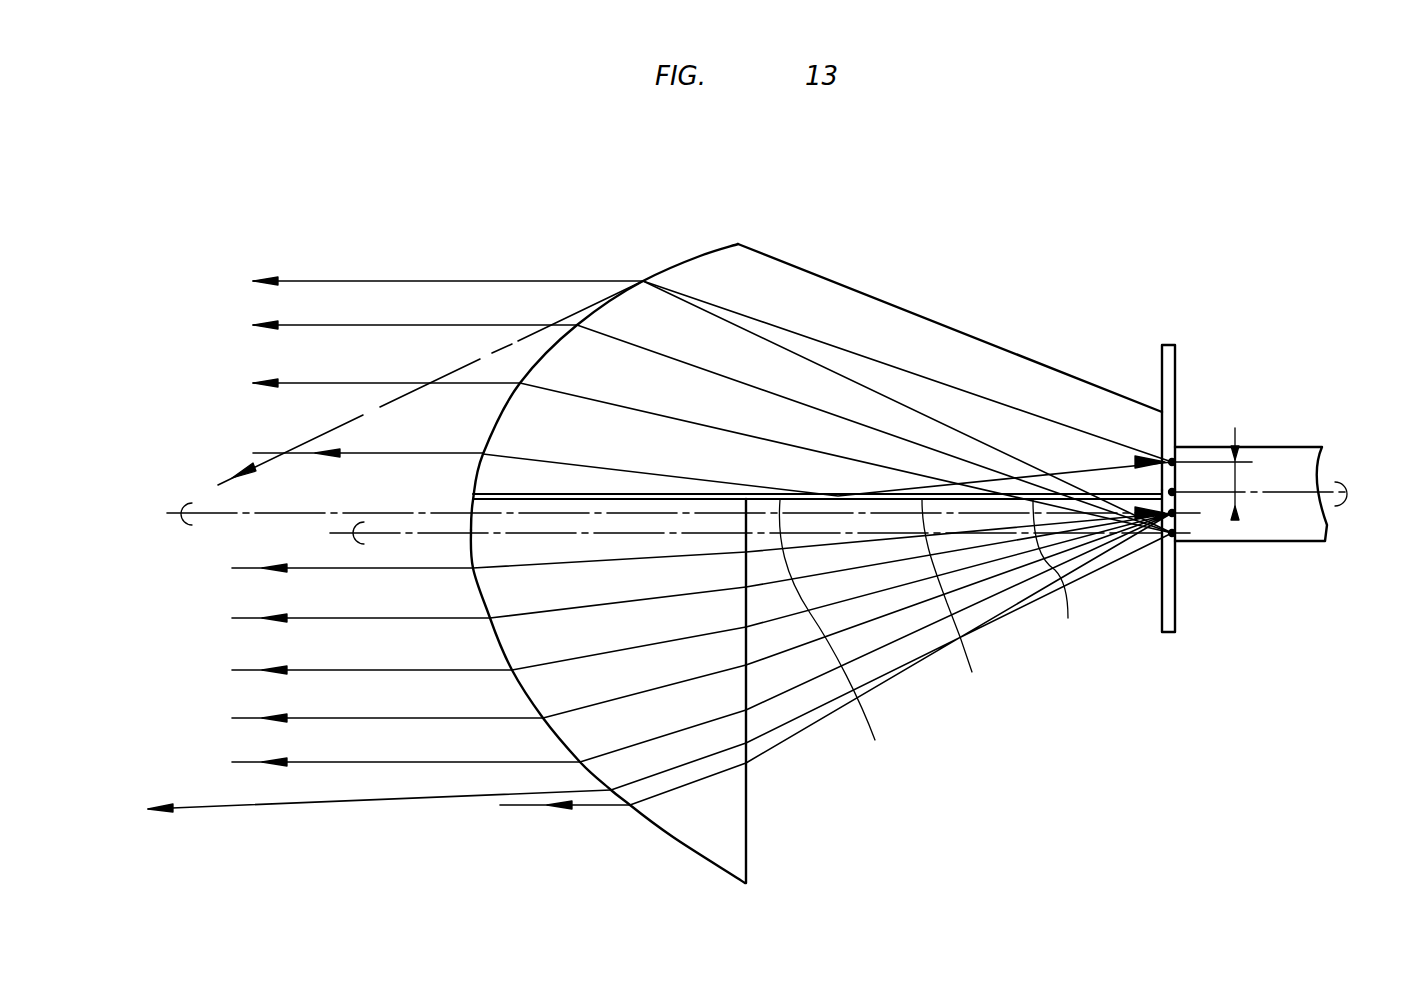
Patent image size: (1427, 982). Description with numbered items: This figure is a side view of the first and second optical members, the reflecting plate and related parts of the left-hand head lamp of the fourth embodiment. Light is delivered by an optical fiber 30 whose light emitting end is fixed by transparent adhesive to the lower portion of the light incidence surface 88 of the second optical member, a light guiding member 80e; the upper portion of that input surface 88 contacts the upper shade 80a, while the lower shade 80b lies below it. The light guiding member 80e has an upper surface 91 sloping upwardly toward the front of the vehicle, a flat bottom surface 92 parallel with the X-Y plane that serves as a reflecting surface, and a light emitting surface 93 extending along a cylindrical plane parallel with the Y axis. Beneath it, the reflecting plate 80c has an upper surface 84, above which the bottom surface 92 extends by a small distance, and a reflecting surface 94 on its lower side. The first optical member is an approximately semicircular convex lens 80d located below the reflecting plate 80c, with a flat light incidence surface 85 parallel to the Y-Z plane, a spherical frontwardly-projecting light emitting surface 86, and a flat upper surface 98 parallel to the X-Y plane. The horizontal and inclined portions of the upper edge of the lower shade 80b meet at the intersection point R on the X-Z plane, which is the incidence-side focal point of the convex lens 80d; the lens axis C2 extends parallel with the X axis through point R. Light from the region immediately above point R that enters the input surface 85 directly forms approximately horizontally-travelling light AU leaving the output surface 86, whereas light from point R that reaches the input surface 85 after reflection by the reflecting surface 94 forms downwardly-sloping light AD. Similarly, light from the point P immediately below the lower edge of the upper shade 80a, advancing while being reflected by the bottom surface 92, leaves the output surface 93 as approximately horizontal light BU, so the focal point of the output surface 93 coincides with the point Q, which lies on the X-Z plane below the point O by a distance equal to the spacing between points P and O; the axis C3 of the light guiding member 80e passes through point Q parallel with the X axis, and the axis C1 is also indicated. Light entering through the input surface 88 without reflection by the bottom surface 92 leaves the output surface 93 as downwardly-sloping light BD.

The optical fiber 30 is at (1287, 457).
The upper shade 80a is at (1176, 362).
The lower shade 80b is at (1176, 615).
The reflecting plate 80c is at (1069, 574).
The first optical member 80d is at (690, 833).
The second optical member 80e is at (800, 300).
The upper surface of the reflecting plate 84 is at (642, 494).
The light incidence surface 85 is at (747, 797).
The light emitting surface 86 is at (633, 810).
The light incidence surface 88 is at (1198, 463).
The upper surface 91 is at (1000, 348).
The bottom surface 92 is at (959, 631).
The light emitting surface 93 is at (670, 273).
The reflecting surface 94 is at (738, 652).
The upper surface 98 is at (707, 494).
The point P is at (1176, 462).
The point O is at (1185, 494).
The intersection point R is at (1177, 515).
The point Q is at (1177, 535).
The axis c1 C1 is at (1340, 500).
The axis c2 C2 is at (177, 527).
The axis c3 C3 is at (353, 521).
The horizontally-travelling light BU is at (372, 281).
The downwardly-sloping light BD is at (253, 467).
The horizontally-travelling light AU is at (257, 762).
The downwardly-sloping light AD is at (270, 810).